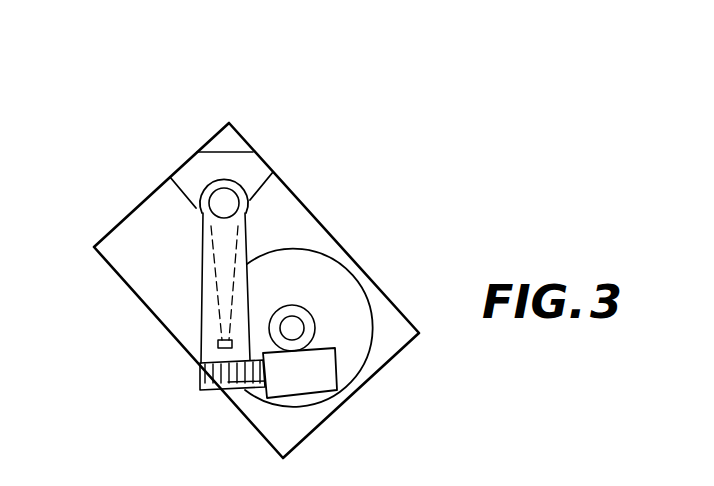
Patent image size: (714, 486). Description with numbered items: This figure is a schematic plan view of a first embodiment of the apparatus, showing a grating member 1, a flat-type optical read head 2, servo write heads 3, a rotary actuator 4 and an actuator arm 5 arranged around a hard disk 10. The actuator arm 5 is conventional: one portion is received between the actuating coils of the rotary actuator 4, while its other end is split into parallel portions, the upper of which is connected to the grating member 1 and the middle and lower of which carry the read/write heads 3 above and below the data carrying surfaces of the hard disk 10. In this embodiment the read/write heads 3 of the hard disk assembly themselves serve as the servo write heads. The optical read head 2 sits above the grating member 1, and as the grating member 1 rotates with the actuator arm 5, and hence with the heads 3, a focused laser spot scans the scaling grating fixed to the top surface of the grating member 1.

The grating member 1 is at (199, 378).
The flat-type optical read head 2 is at (338, 368).
The servo write heads 3 is at (217, 345).
The rotary actuator 4 is at (245, 171).
The actuator arm 5 is at (233, 295).
The hard disk 10 is at (343, 303).